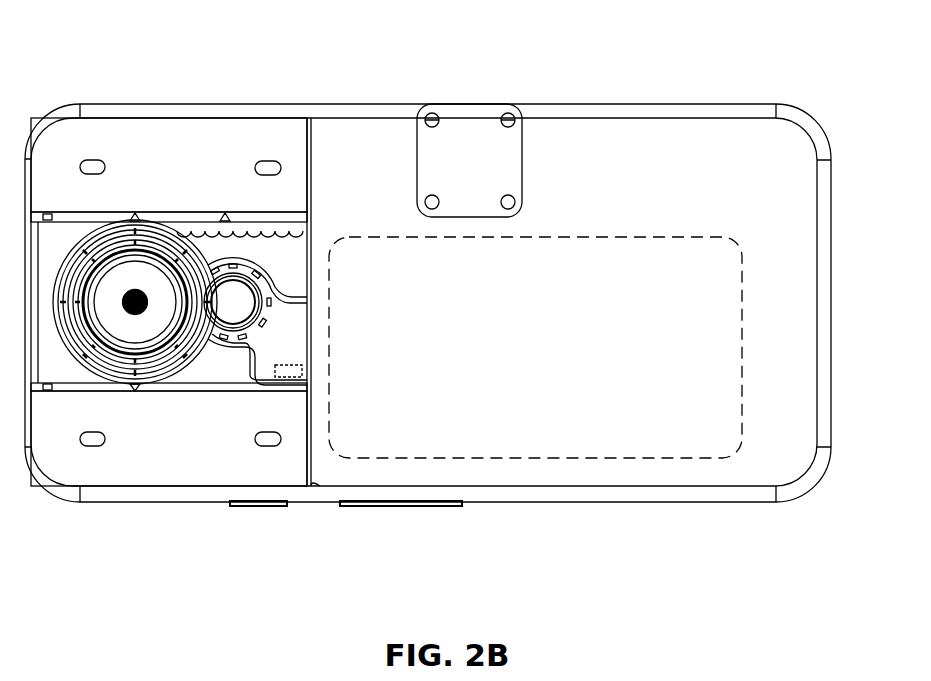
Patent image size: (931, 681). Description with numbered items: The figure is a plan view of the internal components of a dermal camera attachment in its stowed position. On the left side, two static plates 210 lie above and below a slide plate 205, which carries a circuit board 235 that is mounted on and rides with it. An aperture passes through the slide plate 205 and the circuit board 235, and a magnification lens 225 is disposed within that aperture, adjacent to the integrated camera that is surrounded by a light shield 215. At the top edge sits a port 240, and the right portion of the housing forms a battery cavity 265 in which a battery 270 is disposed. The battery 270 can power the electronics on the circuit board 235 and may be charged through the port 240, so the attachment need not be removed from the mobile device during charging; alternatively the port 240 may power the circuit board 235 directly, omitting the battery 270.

The slide plate 205 is at (272, 270).
The static plates 210 is at (170, 176).
The light shield 215 is at (133, 237).
The magnification lens 225 is at (230, 314).
The circuit board 235 is at (272, 350).
The port 240 is at (456, 179).
The battery cavity 265 is at (502, 302).
The battery 270 is at (593, 358).